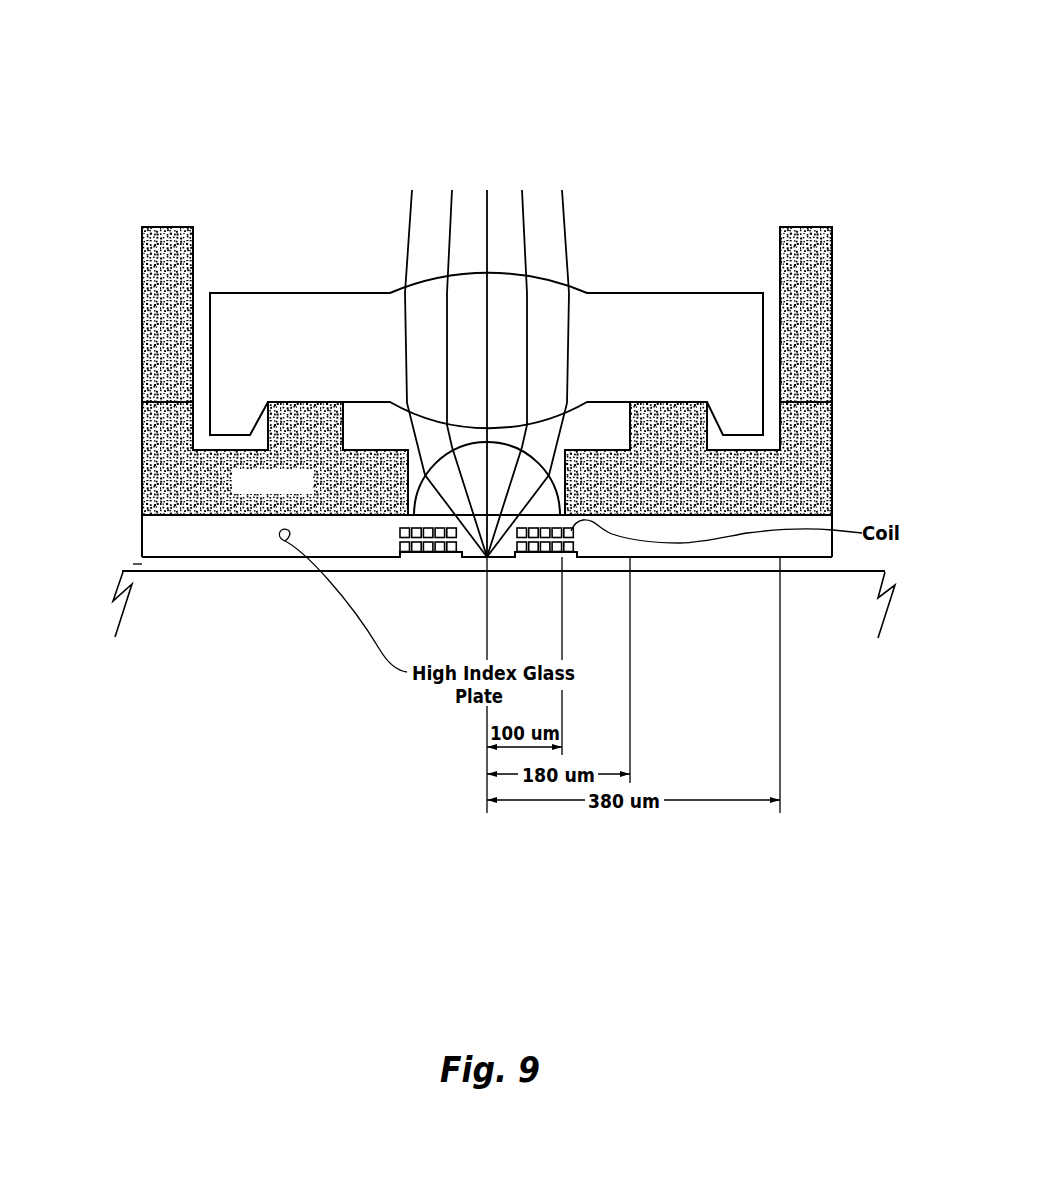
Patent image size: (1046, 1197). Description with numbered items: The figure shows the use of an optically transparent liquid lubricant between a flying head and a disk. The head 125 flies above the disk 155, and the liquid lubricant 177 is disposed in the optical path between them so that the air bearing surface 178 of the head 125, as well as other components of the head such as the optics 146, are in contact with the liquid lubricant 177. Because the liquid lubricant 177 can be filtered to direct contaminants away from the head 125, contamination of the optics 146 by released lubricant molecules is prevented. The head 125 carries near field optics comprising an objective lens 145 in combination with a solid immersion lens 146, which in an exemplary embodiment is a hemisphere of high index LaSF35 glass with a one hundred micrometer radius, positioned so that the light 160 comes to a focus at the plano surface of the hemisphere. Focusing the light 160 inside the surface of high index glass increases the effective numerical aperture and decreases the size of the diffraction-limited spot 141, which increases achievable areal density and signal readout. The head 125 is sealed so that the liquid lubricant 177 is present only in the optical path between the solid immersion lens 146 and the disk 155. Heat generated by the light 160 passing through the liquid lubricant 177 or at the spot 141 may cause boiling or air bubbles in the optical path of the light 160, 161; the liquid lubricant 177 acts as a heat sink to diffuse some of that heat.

The head 125 is at (453, 27).
The objective lens 145 is at (363, 292).
The light 160 is at (597, 309).
The light 161 is at (565, 205).
The solid immersion lens 146 is at (540, 462).
The spot 141 is at (487, 557).
The air bearing surface 178 is at (505, 557).
The disk 155 is at (268, 627).
The liquid lubricant 177 is at (133, 563).